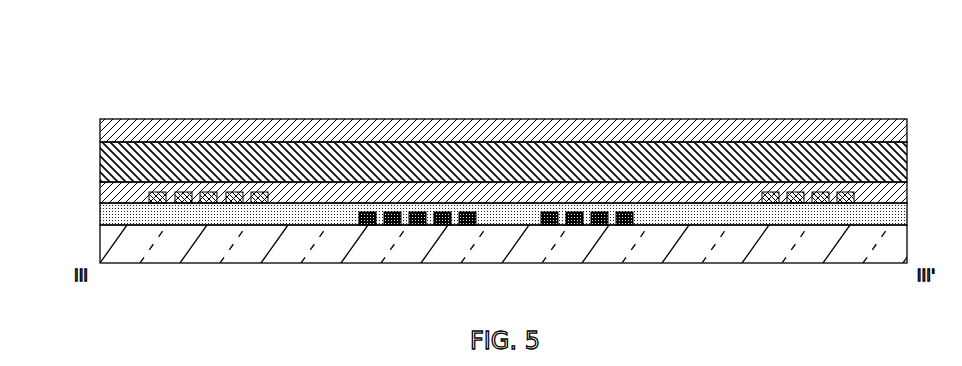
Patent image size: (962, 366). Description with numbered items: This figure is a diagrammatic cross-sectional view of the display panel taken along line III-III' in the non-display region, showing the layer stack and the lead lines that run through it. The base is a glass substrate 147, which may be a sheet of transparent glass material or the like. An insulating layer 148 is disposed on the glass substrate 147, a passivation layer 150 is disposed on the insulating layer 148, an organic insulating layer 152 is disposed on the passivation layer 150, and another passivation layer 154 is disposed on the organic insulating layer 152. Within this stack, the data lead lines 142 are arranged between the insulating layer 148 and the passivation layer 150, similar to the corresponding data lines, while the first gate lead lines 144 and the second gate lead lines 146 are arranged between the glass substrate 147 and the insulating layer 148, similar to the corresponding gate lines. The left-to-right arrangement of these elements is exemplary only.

The data lead lines 142 is at (152, 192).
The first gate lead lines 144 is at (367, 210).
The second gate lead lines 146 is at (417, 210).
The glass substrate 147 is at (767, 252).
The insulating layer 148 is at (107, 213).
The passivation layer 150 is at (525, 190).
The organic insulating layer 152 is at (177, 192).
The another passivation layer 154 is at (708, 128).